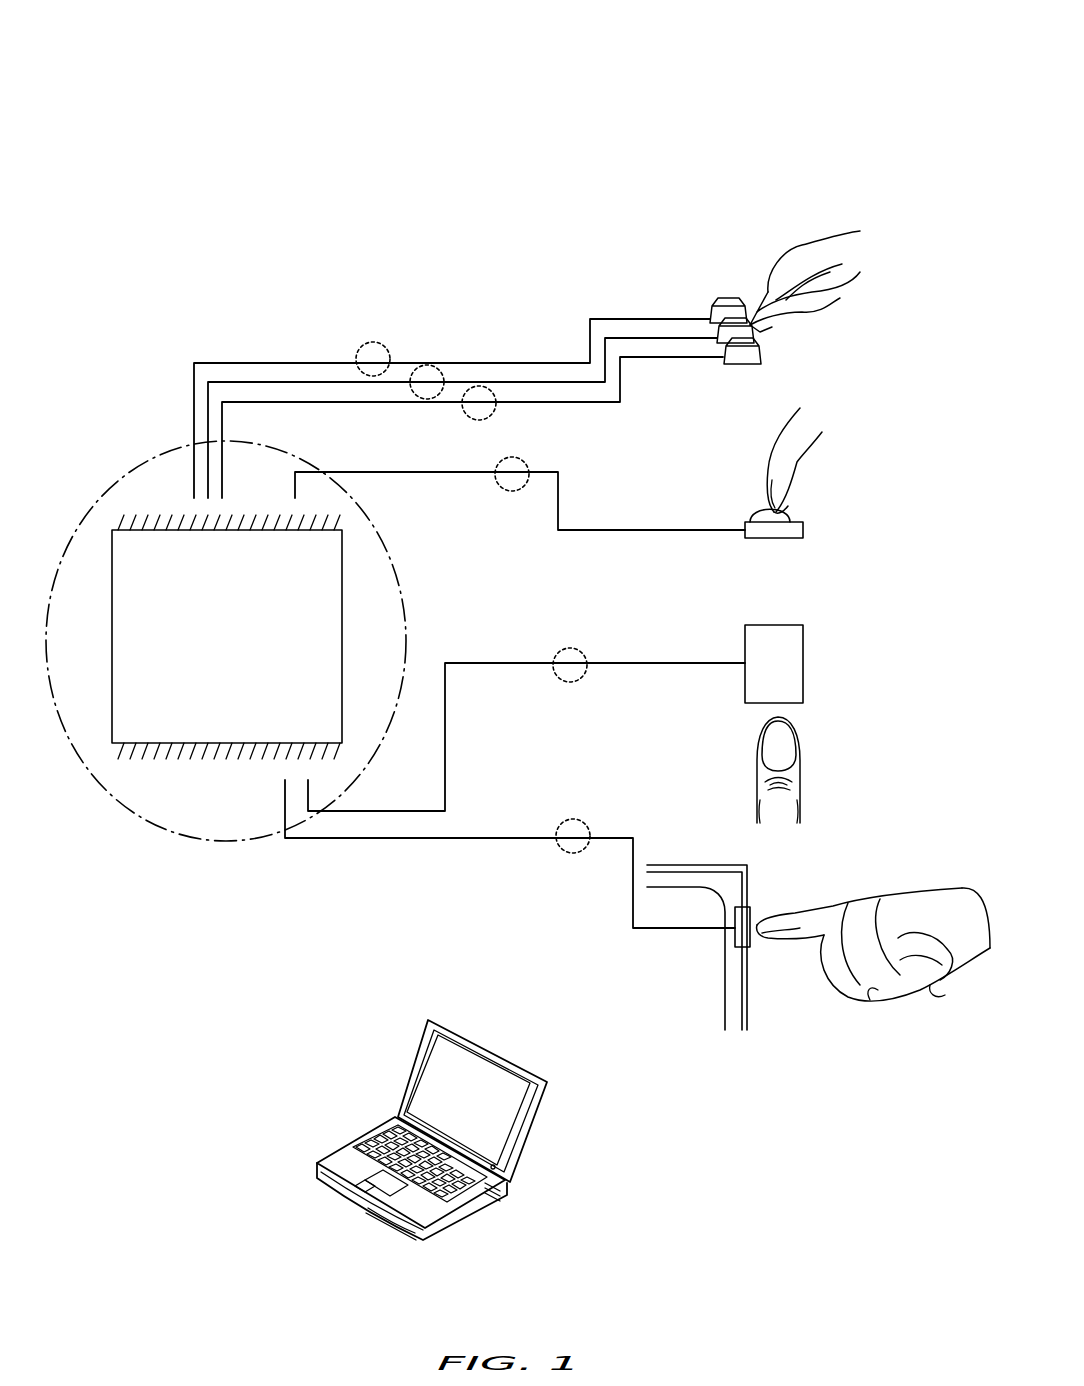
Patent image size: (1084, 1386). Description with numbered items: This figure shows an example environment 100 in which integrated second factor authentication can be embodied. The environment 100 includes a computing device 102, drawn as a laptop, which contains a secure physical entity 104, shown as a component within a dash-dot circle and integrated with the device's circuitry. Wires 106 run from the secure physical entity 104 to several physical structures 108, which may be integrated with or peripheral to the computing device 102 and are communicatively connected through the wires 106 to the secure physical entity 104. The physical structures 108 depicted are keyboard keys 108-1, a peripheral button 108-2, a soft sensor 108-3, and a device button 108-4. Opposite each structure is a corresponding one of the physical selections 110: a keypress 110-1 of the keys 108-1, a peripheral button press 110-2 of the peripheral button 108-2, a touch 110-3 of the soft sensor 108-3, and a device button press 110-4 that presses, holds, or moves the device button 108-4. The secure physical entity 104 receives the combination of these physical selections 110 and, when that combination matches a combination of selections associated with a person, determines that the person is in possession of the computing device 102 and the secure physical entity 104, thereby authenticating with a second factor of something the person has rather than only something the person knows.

The example environment 100 is at (198, 62).
The computing device 102 is at (237, 847).
The secure physical entity 104 is at (180, 919).
The wires 106 is at (556, 825).
The physical structures 108 is at (696, 195).
The keys 108-1 is at (662, 297).
The peripheral button 108-2 is at (690, 591).
The soft sensor 108-3 is at (672, 724).
The device button 108-4 is at (697, 1016).
The physical selections 110 is at (867, 143).
The keypress 110-1 is at (867, 379).
The peripheral button press 110-2 is at (905, 536).
The touch 110-3 is at (877, 767).
The device button press 110-4 is at (827, 1072).